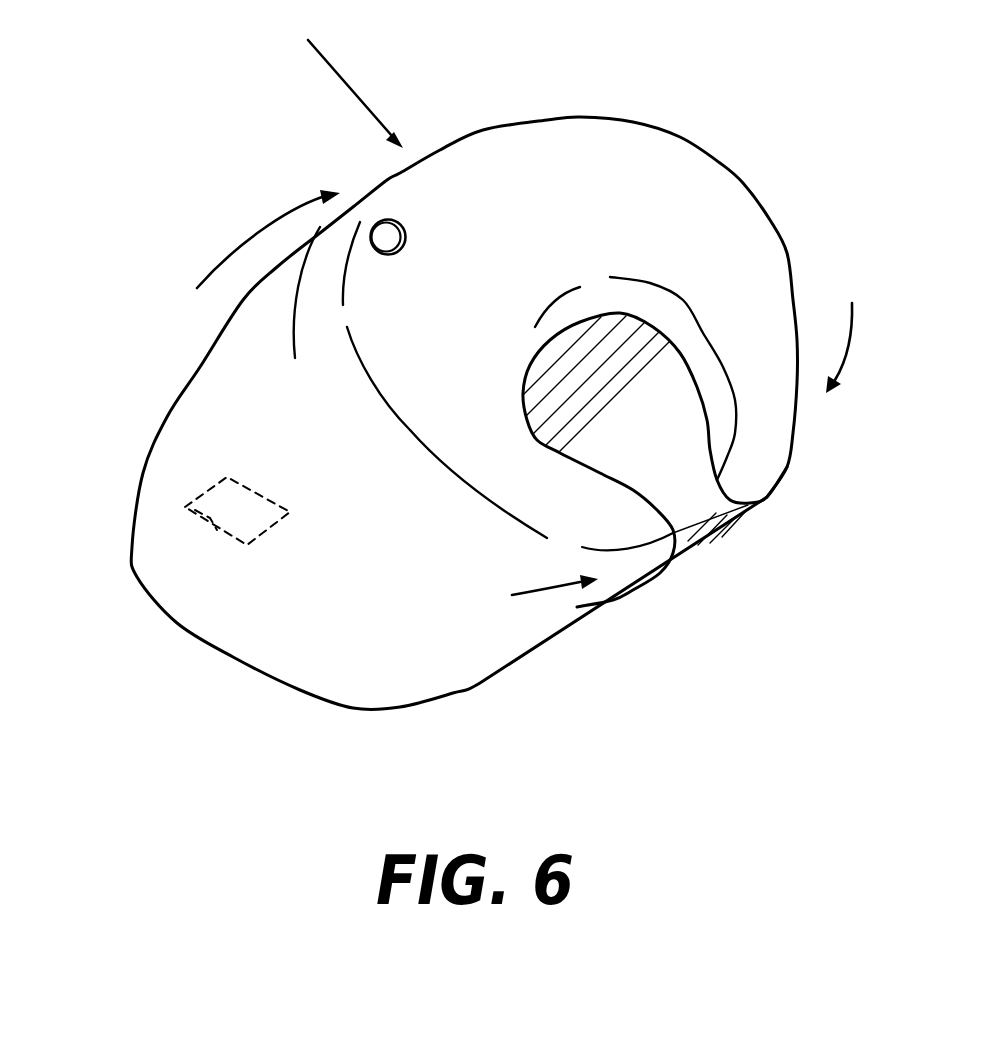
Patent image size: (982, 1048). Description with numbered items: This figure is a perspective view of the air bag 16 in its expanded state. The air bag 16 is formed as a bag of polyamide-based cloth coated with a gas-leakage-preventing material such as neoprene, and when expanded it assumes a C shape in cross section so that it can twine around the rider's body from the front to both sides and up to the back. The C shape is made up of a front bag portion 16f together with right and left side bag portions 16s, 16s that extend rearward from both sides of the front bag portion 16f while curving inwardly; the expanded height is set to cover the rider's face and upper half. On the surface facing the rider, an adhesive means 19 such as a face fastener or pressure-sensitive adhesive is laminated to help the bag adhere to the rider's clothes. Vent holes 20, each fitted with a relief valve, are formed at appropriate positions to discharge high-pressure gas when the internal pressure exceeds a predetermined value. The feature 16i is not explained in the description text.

The air bag 16 is at (634, 168).
The front bag portion 16f is at (455, 177).
The side bag portion 16s is at (775, 327).
The inlet of cushion 16i is at (203, 517).
The adhesive means 19 is at (688, 537).
The vent hole 20 is at (389, 242).